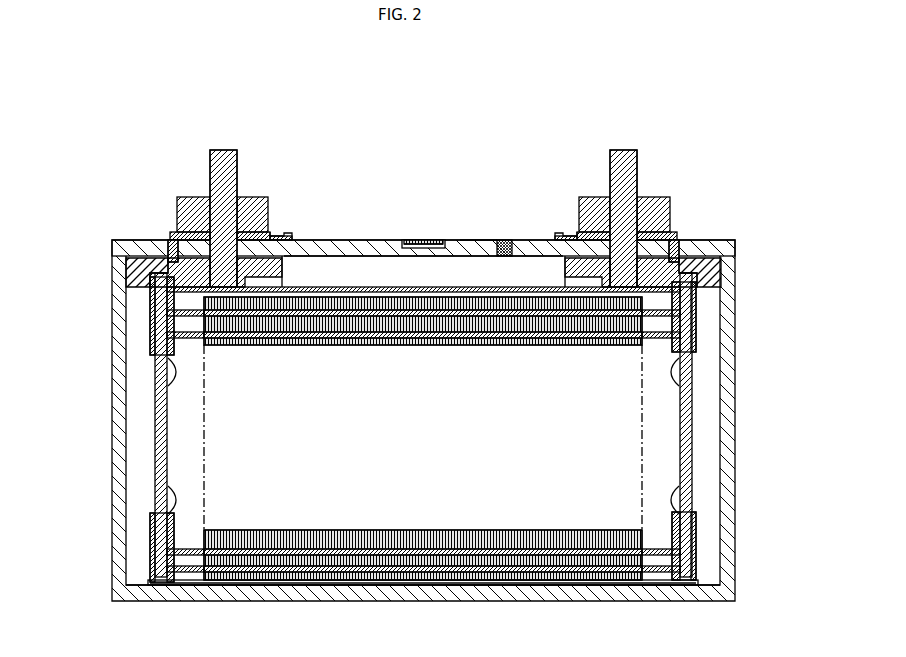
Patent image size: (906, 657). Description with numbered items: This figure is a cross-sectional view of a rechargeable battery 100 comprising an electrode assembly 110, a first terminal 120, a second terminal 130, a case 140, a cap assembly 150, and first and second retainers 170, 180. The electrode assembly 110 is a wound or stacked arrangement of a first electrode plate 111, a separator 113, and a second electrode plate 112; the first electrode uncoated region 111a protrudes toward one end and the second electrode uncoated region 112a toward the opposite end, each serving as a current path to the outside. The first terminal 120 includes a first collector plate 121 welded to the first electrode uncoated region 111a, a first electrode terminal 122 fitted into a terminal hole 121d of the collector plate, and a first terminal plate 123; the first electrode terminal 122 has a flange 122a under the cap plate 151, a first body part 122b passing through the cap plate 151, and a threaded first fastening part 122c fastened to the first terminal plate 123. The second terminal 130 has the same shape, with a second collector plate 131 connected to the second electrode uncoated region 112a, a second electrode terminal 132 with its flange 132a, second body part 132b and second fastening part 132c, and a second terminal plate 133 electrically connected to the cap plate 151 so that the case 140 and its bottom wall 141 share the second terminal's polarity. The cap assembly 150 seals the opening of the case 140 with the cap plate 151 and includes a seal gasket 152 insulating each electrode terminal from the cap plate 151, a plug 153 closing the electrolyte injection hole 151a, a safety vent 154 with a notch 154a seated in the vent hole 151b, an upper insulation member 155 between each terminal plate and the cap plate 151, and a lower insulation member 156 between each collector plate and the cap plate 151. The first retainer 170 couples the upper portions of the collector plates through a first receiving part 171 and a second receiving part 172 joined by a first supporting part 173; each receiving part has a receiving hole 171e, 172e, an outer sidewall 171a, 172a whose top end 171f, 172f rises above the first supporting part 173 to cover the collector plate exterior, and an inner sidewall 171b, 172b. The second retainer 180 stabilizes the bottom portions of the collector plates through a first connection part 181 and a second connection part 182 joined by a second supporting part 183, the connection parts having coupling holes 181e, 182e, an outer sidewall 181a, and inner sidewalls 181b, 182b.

The rechargeable battery 100 is at (770, 103).
The electrode assembly 110 is at (423, 474).
The first electrode plate 111 is at (258, 583).
The first electrode uncoated region 111a is at (186, 575).
The second electrode plate 112 is at (558, 583).
The second electrode uncoated region 112a is at (655, 575).
The separator 113 is at (440, 580).
The first terminal 120 is at (162, 187).
The first collector plate 121 is at (162, 420).
The terminal hole 121d is at (150, 287).
The first electrode terminal 122 is at (207, 214).
The flange 122a is at (125, 262).
The first body part 122b is at (243, 222).
The first fastening part 122c is at (226, 150).
The first terminal plate 123 is at (185, 189).
The second terminal 130 is at (687, 185).
The second collector plate 131 is at (686, 418).
The second electrode terminal 132 is at (642, 222).
The flange 132a is at (722, 262).
The second body part 132b is at (605, 215).
The second fastening part 132c is at (628, 175).
The second terminal plate 133 is at (656, 206).
The case 140 is at (458, 446).
The case bottom 141 is at (708, 590).
The cap assembly 150 is at (423, 197).
The cap plate 151 is at (423, 210).
The electrolyte injection hole 151a is at (488, 212).
The vent hole 151b is at (414, 206).
The seal gasket 152 is at (188, 238).
The plug 153 is at (504, 240).
The safety vent 154 is at (440, 240).
The notch 154a is at (422, 240).
The upper insulation member 155 is at (278, 236).
The lower insulation member 156 is at (284, 270).
The first retainer 170 is at (357, 285).
The first receiving part 171 is at (108, 319).
The outer sidewall 171a is at (150, 300).
The inner sidewall 171b is at (166, 375).
The receiving hole 171e is at (150, 347).
The top end 171f is at (148, 278).
The second receiving part 172 is at (740, 320).
The outer sidewall 172a is at (696, 298).
The inner sidewall 172b is at (681, 375).
The receiving hole 172e is at (696, 345).
The top end 172f is at (697, 278).
The first supporting part 173 is at (410, 278).
The second retainer 180 is at (360, 587).
The first connection part 181 is at (108, 545).
The outer sidewall 181a is at (150, 527).
The inner sidewall 181b is at (166, 500).
The coupling hole 181e is at (150, 562).
The second connection part 182 is at (736, 532).
The inner sidewall 182b is at (681, 500).
The coupling hole 182e is at (696, 556).
The second supporting part 183 is at (298, 583).